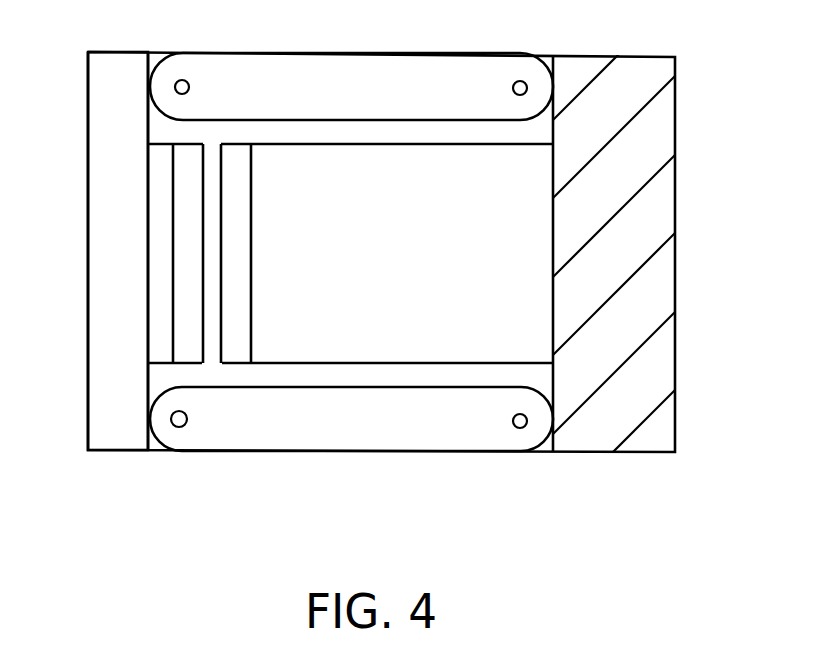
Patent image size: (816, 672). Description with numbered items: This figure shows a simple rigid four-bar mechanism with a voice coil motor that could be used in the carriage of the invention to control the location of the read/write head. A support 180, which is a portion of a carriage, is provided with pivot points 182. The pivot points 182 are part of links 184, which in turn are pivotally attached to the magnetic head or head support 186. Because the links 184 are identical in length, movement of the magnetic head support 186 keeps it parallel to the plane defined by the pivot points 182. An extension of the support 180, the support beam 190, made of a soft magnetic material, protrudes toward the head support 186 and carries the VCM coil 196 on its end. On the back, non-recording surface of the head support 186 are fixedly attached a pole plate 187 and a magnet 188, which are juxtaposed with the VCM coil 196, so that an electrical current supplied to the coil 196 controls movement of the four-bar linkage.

The support 180 is at (665, 56).
The pivot points 182 is at (518, 80).
The links 184 is at (309, 69).
The magnetic head or head support 186 is at (113, 303).
The pole plate 187 is at (158, 291).
The magnet 188 is at (190, 312).
The support beam 190 is at (493, 205).
The VCM coil 196 is at (235, 249).